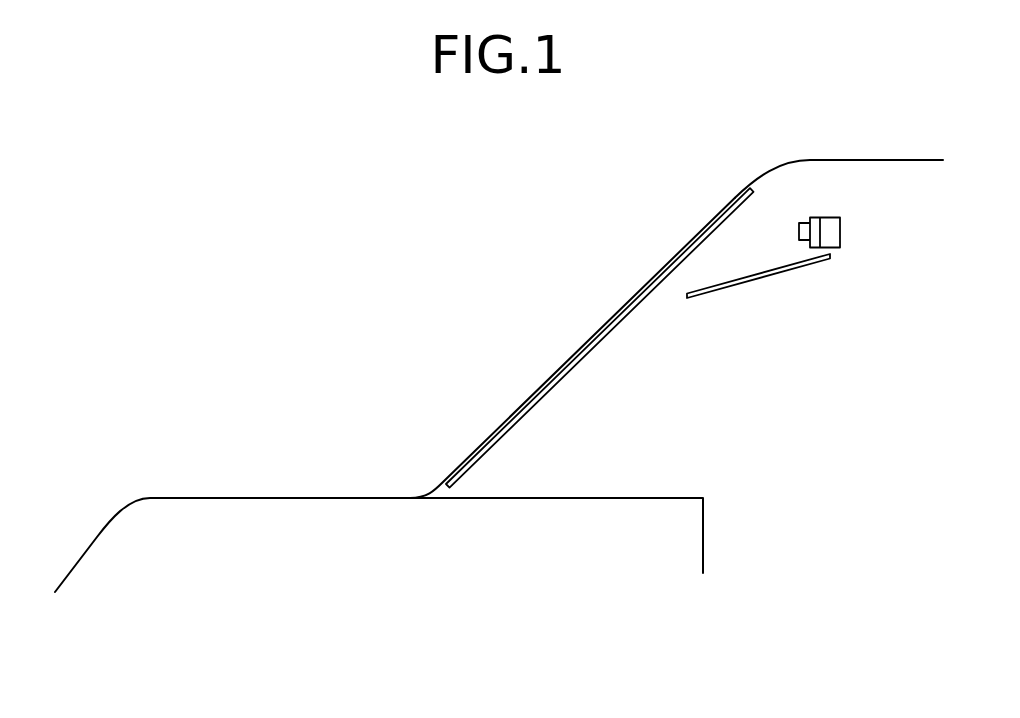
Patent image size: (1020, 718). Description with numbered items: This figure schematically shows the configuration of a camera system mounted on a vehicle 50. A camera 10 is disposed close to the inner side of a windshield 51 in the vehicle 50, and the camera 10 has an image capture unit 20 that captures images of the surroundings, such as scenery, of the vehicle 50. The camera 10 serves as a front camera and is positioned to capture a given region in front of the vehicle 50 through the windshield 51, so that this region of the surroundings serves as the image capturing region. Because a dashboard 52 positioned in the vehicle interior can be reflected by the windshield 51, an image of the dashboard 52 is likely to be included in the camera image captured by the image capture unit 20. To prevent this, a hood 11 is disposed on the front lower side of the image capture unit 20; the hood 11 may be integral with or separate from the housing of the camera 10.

The camera 10 is at (840, 222).
The hood 11 is at (793, 269).
The image capture unit 20 is at (817, 218).
The vehicle 50 is at (910, 160).
The windshield 51 is at (629, 307).
The dashboard 52 is at (676, 498).